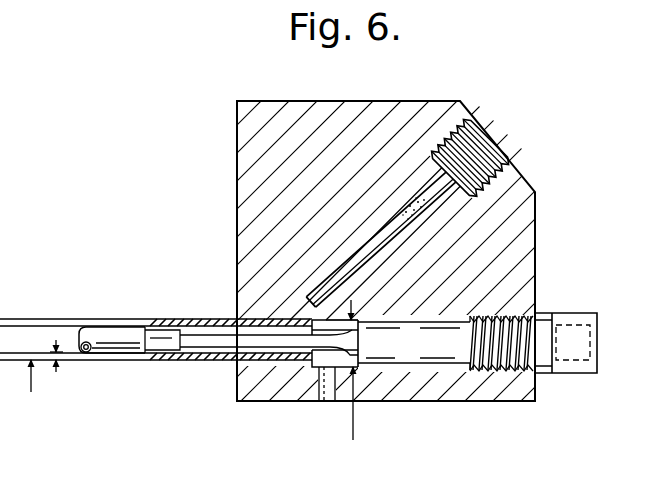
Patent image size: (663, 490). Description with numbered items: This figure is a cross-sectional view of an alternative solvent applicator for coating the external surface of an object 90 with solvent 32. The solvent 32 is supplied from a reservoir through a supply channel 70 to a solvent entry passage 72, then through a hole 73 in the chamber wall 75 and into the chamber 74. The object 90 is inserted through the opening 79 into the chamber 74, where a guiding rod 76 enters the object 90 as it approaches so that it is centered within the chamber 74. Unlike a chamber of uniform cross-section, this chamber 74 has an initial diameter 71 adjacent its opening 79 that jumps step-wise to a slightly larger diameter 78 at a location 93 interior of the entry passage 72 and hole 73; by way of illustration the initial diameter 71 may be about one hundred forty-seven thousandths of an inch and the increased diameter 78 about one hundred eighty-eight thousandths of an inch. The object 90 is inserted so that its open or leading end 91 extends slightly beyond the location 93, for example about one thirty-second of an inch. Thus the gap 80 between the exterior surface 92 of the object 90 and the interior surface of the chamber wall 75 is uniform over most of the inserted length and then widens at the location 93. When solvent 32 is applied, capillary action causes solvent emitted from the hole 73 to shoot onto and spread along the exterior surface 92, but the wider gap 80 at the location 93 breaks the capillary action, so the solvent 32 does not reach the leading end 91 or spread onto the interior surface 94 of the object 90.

The solvent 32 is at (412, 205).
The supply channel 70 is at (396, 230).
The diameter of the chamber 71 is at (31, 319).
The solvent entry passage 72 is at (302, 303).
The hole 73 is at (290, 322).
The chamber 74 is at (242, 322).
The chamber wall 75 is at (290, 368).
The guiding rod 76 is at (275, 370).
The increased diameter 78 is at (353, 432).
The opening of the chamber 79 is at (240, 362).
The gap 80 is at (52, 371).
The object 90 is at (116, 335).
The leading end 91 is at (338, 320).
The exterior surface 92 is at (117, 357).
The location 93 is at (328, 373).
The interior surface 94 is at (163, 346).